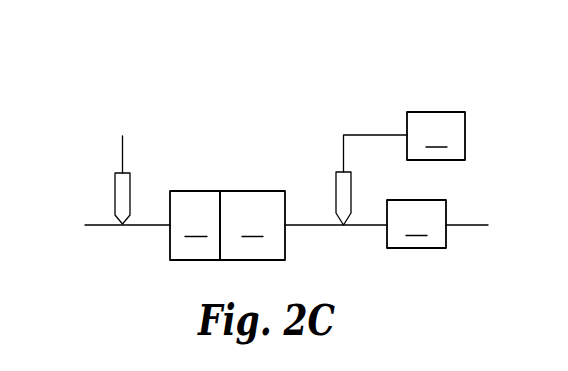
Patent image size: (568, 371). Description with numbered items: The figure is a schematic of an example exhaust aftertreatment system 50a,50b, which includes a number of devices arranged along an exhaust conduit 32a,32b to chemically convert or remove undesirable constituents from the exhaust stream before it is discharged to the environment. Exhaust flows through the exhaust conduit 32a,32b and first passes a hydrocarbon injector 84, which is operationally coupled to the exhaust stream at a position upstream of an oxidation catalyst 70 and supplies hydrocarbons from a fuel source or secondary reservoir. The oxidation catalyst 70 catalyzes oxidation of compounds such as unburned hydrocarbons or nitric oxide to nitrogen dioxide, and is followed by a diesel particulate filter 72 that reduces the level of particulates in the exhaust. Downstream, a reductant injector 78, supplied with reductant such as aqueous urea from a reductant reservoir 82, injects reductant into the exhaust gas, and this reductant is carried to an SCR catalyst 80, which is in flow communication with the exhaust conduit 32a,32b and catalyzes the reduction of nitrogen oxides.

The exhaust aftertreatment system 50a,50b is at (363, 84).
The exhaust conduit 32a,32b is at (107, 226).
The hydrocarbon (HC) injector 84 is at (115, 187).
The oxidation catalyst 70 is at (195, 225).
The diesel particulate filter 72 is at (252, 225).
The reductant injector 78 is at (335, 185).
The SCR catalyst 80 is at (416, 224).
The reductant reservoir 82 is at (436, 136).